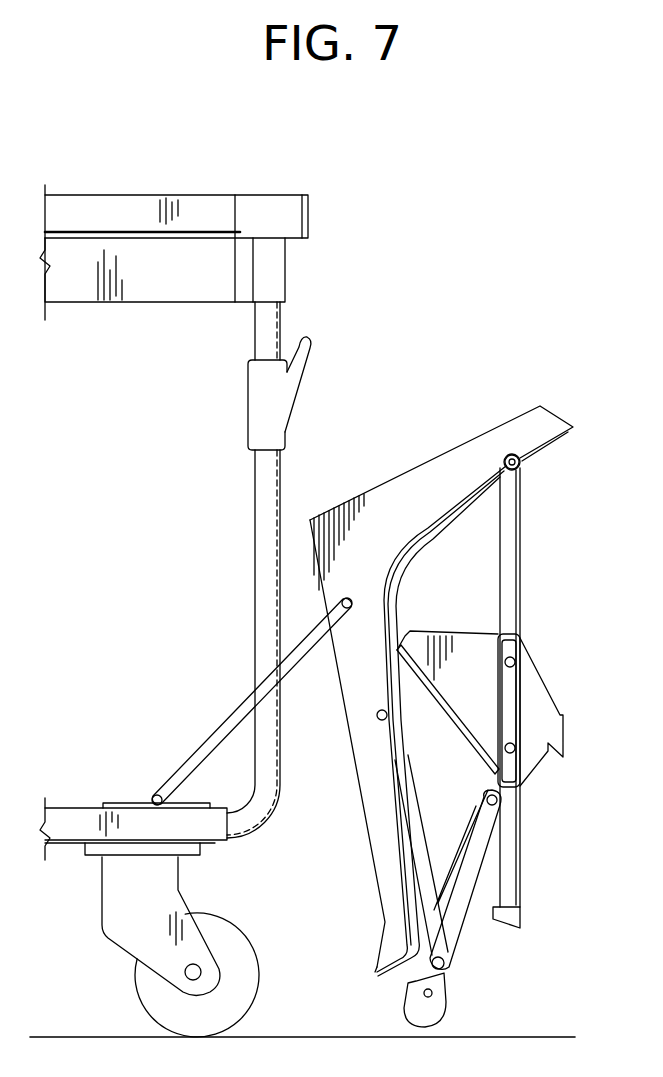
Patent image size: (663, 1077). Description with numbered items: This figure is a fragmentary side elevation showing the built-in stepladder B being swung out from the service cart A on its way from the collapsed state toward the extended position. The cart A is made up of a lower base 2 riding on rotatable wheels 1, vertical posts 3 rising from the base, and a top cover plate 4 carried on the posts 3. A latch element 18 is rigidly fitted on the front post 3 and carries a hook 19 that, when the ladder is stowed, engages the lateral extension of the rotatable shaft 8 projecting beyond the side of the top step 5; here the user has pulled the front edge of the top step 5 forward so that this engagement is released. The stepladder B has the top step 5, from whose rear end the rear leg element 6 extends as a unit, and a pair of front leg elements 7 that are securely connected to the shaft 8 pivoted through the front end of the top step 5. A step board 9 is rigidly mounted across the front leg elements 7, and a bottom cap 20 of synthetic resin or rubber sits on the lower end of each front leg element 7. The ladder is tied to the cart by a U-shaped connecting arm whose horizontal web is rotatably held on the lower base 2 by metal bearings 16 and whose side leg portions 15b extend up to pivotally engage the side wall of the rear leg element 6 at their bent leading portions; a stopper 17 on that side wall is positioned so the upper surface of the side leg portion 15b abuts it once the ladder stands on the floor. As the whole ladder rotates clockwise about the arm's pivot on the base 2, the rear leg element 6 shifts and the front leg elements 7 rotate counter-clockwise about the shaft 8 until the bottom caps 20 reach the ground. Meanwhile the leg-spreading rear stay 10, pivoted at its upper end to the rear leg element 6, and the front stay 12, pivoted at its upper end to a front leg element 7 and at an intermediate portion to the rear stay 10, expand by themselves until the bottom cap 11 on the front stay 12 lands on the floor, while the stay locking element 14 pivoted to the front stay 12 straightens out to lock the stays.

The rotatable wheels 1 is at (160, 1003).
The lower base 2 is at (80, 808).
The posts 3 is at (255, 548).
The top cover plate 4 is at (118, 215).
The top step 5 is at (405, 490).
The rear leg element 6 is at (385, 848).
The front leg elements 7 is at (512, 565).
The rotatable shaft 8 is at (520, 466).
The step board 9 is at (540, 700).
The rear stay 10 is at (427, 830).
The bottom cap 11 is at (443, 1008).
The front stay 12 is at (462, 938).
The stay locking element 14 is at (453, 846).
The side leg portions 15b is at (200, 760).
The metal bearings 16 is at (156, 795).
The stopper 17 is at (343, 603).
The latch element 18 is at (262, 418).
The hook 19 is at (310, 341).
The bottom cap 20 is at (520, 915).
The cart A is at (198, 190).
The stepladder B is at (505, 417).